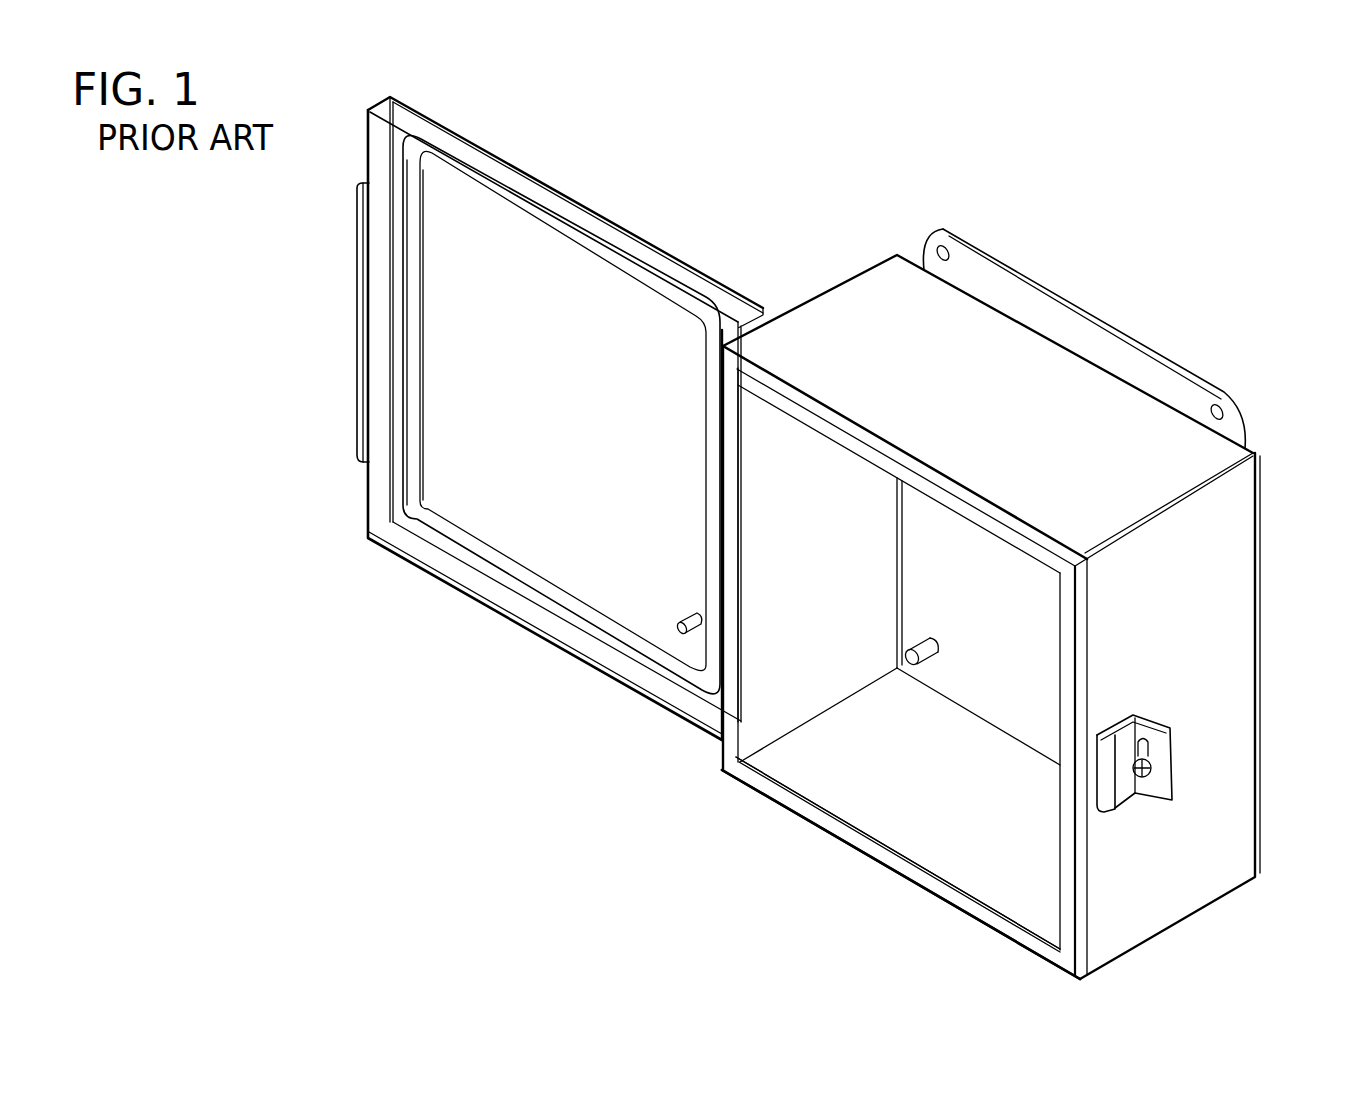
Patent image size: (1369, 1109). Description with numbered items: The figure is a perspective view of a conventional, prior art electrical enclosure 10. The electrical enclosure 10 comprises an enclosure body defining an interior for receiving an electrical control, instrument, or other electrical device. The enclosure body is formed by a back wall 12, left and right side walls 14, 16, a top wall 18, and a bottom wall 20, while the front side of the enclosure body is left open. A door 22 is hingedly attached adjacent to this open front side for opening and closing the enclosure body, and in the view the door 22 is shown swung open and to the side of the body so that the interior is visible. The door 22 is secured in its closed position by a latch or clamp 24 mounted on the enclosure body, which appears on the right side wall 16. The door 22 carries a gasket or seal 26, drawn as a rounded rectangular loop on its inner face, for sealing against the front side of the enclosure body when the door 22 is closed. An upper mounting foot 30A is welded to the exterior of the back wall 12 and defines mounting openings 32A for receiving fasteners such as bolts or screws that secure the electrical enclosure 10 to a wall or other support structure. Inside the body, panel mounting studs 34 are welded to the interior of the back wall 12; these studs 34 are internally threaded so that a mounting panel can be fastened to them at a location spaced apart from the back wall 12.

The electrical enclosure 10 is at (1023, 167).
The back wall 12 is at (1021, 628).
The left side wall 14 is at (785, 648).
The right side wall 16 is at (1207, 642).
The top wall 18 is at (872, 318).
The bottom wall 20 is at (977, 845).
The door 22 is at (500, 170).
The latch or clamp 24 is at (1148, 788).
The gasket or seal 26 is at (460, 540).
The upper mounting foot 30A is at (1093, 318).
The mounting opening 32A is at (945, 248).
The panel mounting stud 34 is at (933, 660).